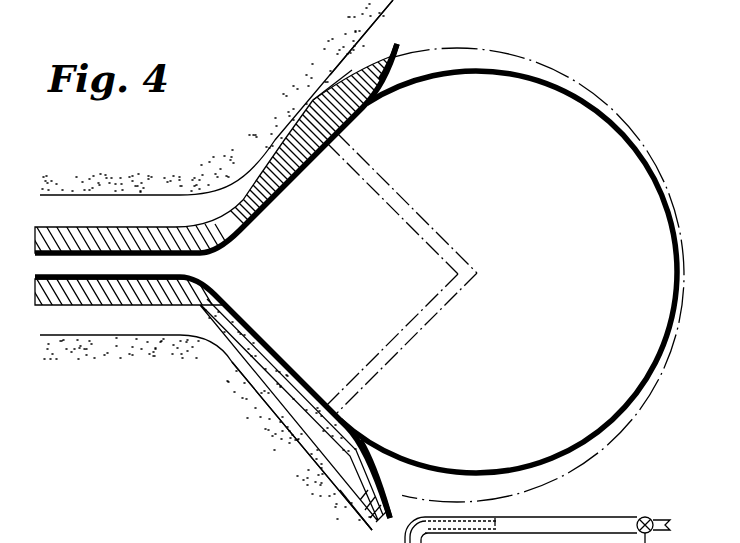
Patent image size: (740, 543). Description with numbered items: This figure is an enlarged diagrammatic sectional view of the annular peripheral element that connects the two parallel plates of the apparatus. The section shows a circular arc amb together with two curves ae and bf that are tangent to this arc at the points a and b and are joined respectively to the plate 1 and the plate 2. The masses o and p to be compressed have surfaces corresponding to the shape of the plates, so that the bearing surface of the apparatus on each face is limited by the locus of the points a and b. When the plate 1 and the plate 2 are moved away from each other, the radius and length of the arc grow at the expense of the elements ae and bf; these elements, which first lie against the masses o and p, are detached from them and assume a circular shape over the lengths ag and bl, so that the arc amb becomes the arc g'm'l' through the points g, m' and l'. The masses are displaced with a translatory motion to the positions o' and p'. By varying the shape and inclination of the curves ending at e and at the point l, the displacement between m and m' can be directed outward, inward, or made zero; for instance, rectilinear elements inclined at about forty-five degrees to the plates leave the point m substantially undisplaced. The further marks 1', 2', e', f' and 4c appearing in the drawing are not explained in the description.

The plate 1 is at (213, 100).
The upper tube wall 1' is at (129, 232).
The plate 2 is at (129, 304).
The lower outer stippled layer 2' is at (206, 432).
The end point of curve ae e is at (216, 148).
The upper outer boundary line e' is at (216, 98).
The lower outer boundary line f' is at (273, 433).
The end point of circular length ag g is at (227, 200).
The end point of enlarged arc g' is at (318, 101).
The mass to be compressed o is at (398, 53).
The displaced position of mass o o' is at (370, 37).
The tangent point of curve ae a is at (402, 194).
The tangent point of curve bf b is at (401, 346).
The end point of circular length bl l is at (212, 397).
The end point of enlarged arc l' is at (293, 410).
The point of circular arc m is at (512, 272).
The displaced position of point m m' is at (539, 275).
The mass to be compressed p is at (383, 479).
The displaced position of mass p p' is at (362, 516).
The valve tube 4c is at (646, 517).